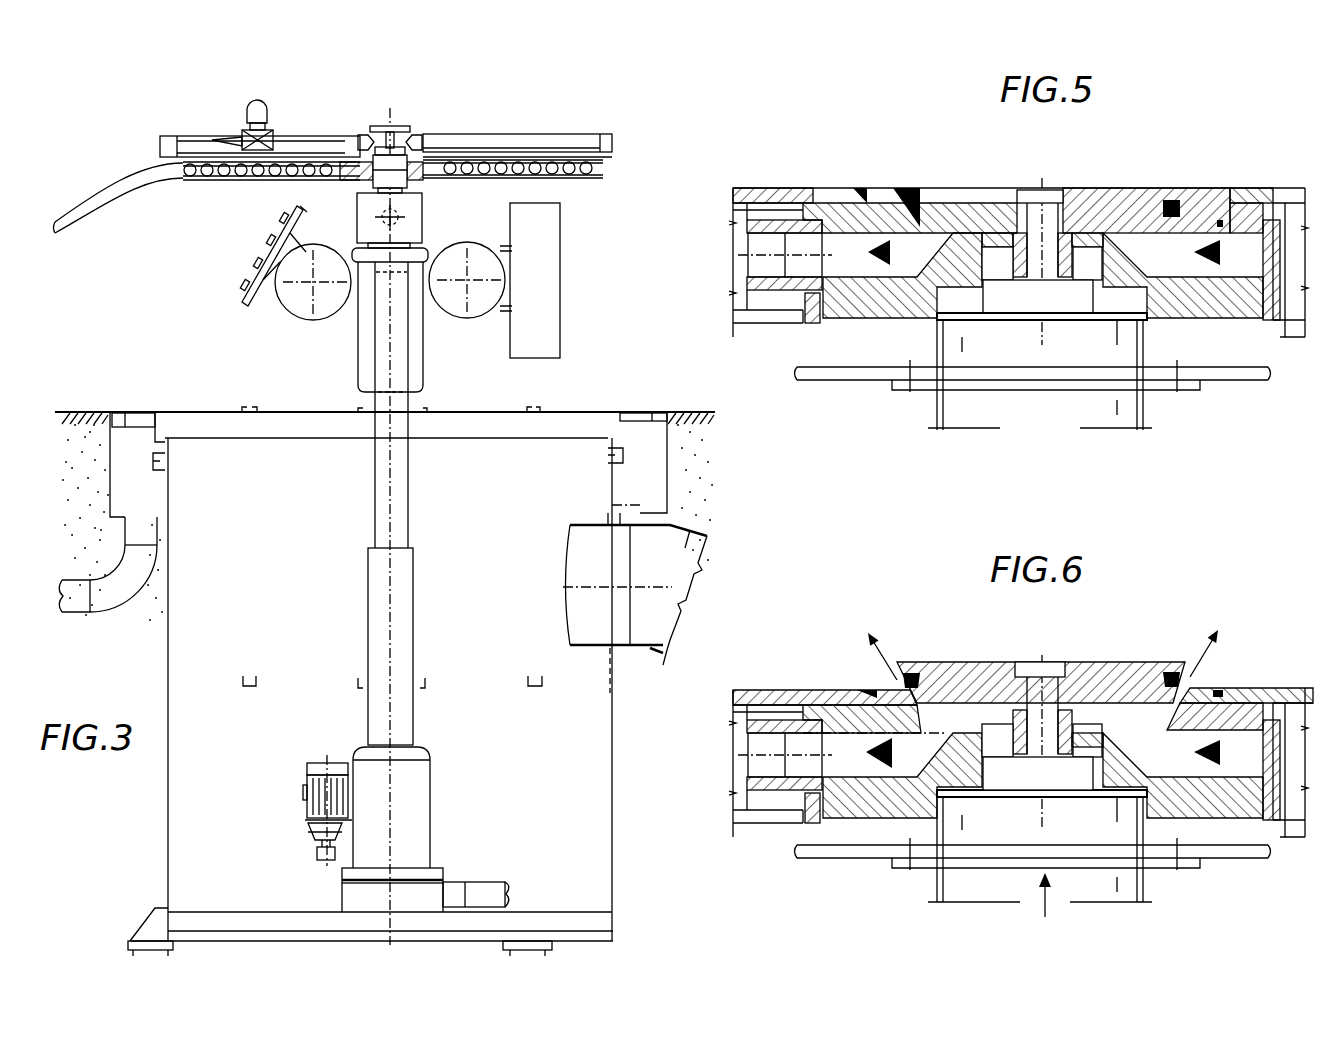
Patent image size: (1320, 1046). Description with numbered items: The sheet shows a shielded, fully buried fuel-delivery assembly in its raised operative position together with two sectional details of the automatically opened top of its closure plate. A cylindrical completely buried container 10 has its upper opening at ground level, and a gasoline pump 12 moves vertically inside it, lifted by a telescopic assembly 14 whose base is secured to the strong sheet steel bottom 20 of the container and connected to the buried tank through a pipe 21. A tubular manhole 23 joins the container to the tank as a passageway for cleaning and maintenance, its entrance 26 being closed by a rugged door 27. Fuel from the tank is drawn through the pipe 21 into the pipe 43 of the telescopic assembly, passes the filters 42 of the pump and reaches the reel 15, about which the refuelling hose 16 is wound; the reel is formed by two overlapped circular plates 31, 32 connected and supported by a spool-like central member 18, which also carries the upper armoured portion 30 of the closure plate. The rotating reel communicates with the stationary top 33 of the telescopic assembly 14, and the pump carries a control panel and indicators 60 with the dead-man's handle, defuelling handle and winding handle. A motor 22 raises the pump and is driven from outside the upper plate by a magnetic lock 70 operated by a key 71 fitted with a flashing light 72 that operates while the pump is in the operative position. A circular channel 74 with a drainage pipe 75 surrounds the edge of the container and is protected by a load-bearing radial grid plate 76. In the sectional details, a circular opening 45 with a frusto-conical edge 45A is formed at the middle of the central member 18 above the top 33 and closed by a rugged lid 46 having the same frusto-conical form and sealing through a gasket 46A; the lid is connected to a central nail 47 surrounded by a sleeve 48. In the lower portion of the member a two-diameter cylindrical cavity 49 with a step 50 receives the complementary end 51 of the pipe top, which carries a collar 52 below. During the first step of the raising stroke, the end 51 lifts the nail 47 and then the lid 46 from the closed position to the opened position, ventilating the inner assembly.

In FIG. 3, the container 10 is at (160, 806).
In FIG. 3, the gasoline pump 12 is at (514, 127).
In FIG. 5, the gasoline pump 12 is at (1244, 176).
In FIG. 3, the telescopic assembly 14 is at (430, 586).
In FIG. 3, the reel 15 is at (205, 186).
In FIG. 3, the hose 16 is at (90, 212).
In FIG. 5, the central member 18 is at (884, 195).
In FIG. 6, the central member 18 is at (896, 695).
In FIG. 3, the bottom 20 is at (222, 925).
In FIG. 3, the pipe 21 is at (490, 890).
In FIG. 3, the motor 22 is at (315, 785).
In FIG. 3, the tubular manhole 23 is at (673, 537).
In FIG. 3, the entrance 26 is at (592, 623).
In FIG. 3, the door 27 is at (566, 614).
In FIG. 3, the upper armoured portion 30 is at (327, 135).
In FIG. 5, the upper armoured portion 30 is at (800, 188).
In FIG. 6, the upper armoured portion 30 is at (770, 690).
In FIG. 3, the circular plate 31 is at (576, 153).
In FIG. 5, the circular plate 31 is at (1247, 333).
In FIG. 6, the circular plate 31 is at (1244, 848).
In FIG. 3, the circular plate 32 is at (588, 178).
In FIG. 3, the top 33 is at (434, 216).
In FIG. 3, the filters 42 is at (295, 306).
In FIG. 3, the pipe 43 is at (400, 503).
In FIG. 6, the circular opening 45 is at (1122, 720).
In FIG. 6, the edge 45A is at (1182, 695).
In FIG. 3, the lid 46 is at (408, 128).
In FIG. 5, the lid 46 is at (1124, 210).
In FIG. 6, the lid 46 is at (958, 680).
In FIG. 5, the sealing gasket 46A is at (1171, 200).
In FIG. 6, the sealing gasket 46A is at (912, 683).
In FIG. 3, the nail 47 is at (386, 126).
In FIG. 5, the nail 47 is at (1040, 190).
In FIG. 6, the nail 47 is at (1037, 662).
In FIG. 5, the sleeve 48 is at (996, 260).
In FIG. 6, the sleeve 48 is at (994, 715).
In FIG. 5, the cylindrical cavity 49 is at (1090, 260).
In FIG. 5, the step 50 is at (1115, 325).
In FIG. 5, the end 51 is at (1007, 293).
In FIG. 6, the end 51 is at (1018, 836).
In FIG. 3, the collar 52 is at (362, 182).
In FIG. 5, the collar 52 is at (1160, 382).
In FIG. 6, the collar 52 is at (1160, 860).
In FIG. 3, the control panel and indicators 60 is at (260, 253).
In FIG. 3, the magnetic lock 70 is at (240, 142).
In FIG. 3, the key 71 is at (240, 132).
In FIG. 3, the flashing light 72 is at (259, 117).
In FIG. 3, the circular channel 74 is at (135, 452).
In FIG. 3, the drainage pipe 75 is at (82, 600).
In FIG. 3, the radial grid plate 76 is at (120, 415).